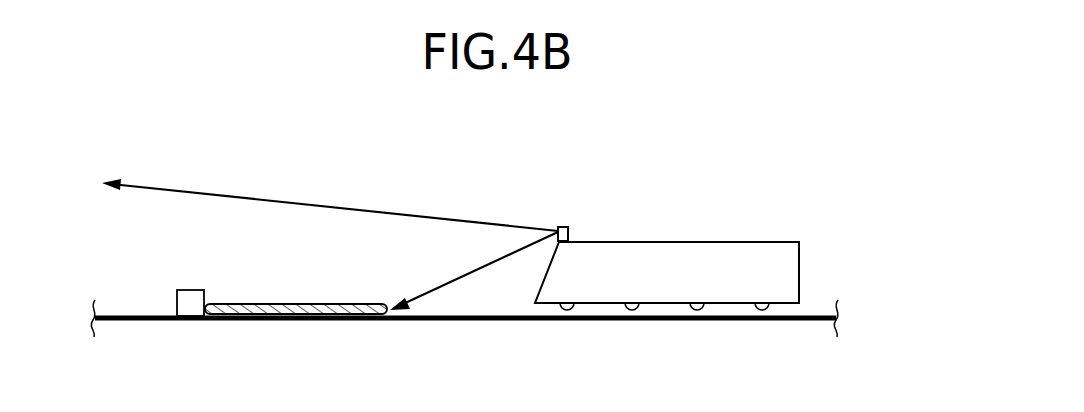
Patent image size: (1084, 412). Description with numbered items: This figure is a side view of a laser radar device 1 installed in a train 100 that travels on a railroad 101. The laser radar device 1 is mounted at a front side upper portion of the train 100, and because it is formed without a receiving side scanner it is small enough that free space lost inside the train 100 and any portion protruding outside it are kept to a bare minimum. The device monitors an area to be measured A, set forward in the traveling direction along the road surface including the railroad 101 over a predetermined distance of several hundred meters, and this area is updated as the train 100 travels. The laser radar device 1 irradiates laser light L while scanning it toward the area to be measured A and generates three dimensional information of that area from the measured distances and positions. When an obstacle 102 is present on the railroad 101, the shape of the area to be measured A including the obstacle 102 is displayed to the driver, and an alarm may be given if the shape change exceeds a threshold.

The laser radar device 1 is at (563, 225).
The train 100 is at (755, 240).
The railroad 101 is at (821, 312).
The obstacle 102 is at (192, 312).
The area to be measured A is at (255, 314).
The laser light L is at (364, 212).